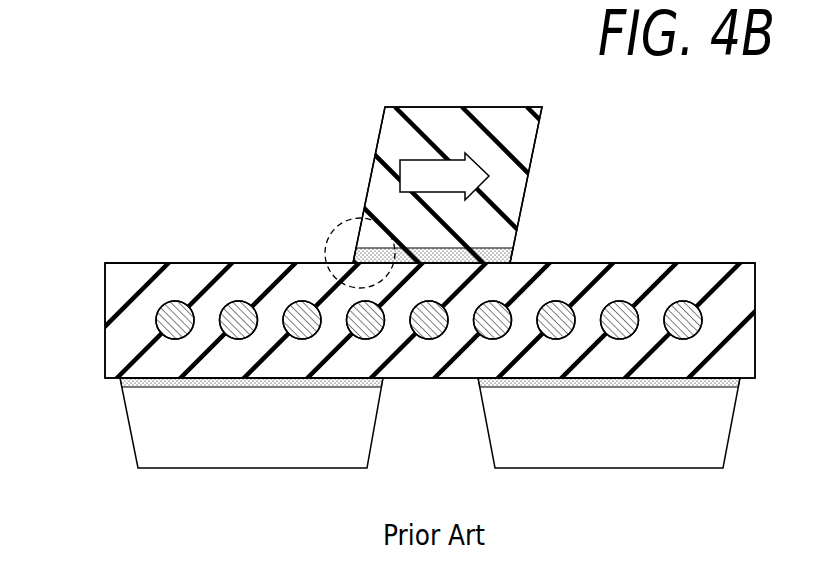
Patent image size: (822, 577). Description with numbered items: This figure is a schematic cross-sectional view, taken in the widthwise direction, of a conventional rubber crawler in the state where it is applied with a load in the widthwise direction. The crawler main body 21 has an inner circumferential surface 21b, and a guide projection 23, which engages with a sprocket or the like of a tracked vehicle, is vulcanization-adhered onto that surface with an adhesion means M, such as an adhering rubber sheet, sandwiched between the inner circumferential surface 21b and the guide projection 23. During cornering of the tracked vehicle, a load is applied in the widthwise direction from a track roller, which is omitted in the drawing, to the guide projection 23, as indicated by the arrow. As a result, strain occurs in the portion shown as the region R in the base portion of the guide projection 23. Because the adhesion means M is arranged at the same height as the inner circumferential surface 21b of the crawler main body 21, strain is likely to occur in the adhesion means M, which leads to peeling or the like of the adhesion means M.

The crawler main body 21 is at (103, 303).
The inner circumferential surface 21b is at (265, 263).
The guide projection 23 is at (493, 123).
The adhesion means M is at (502, 255).
The region R is at (342, 226).